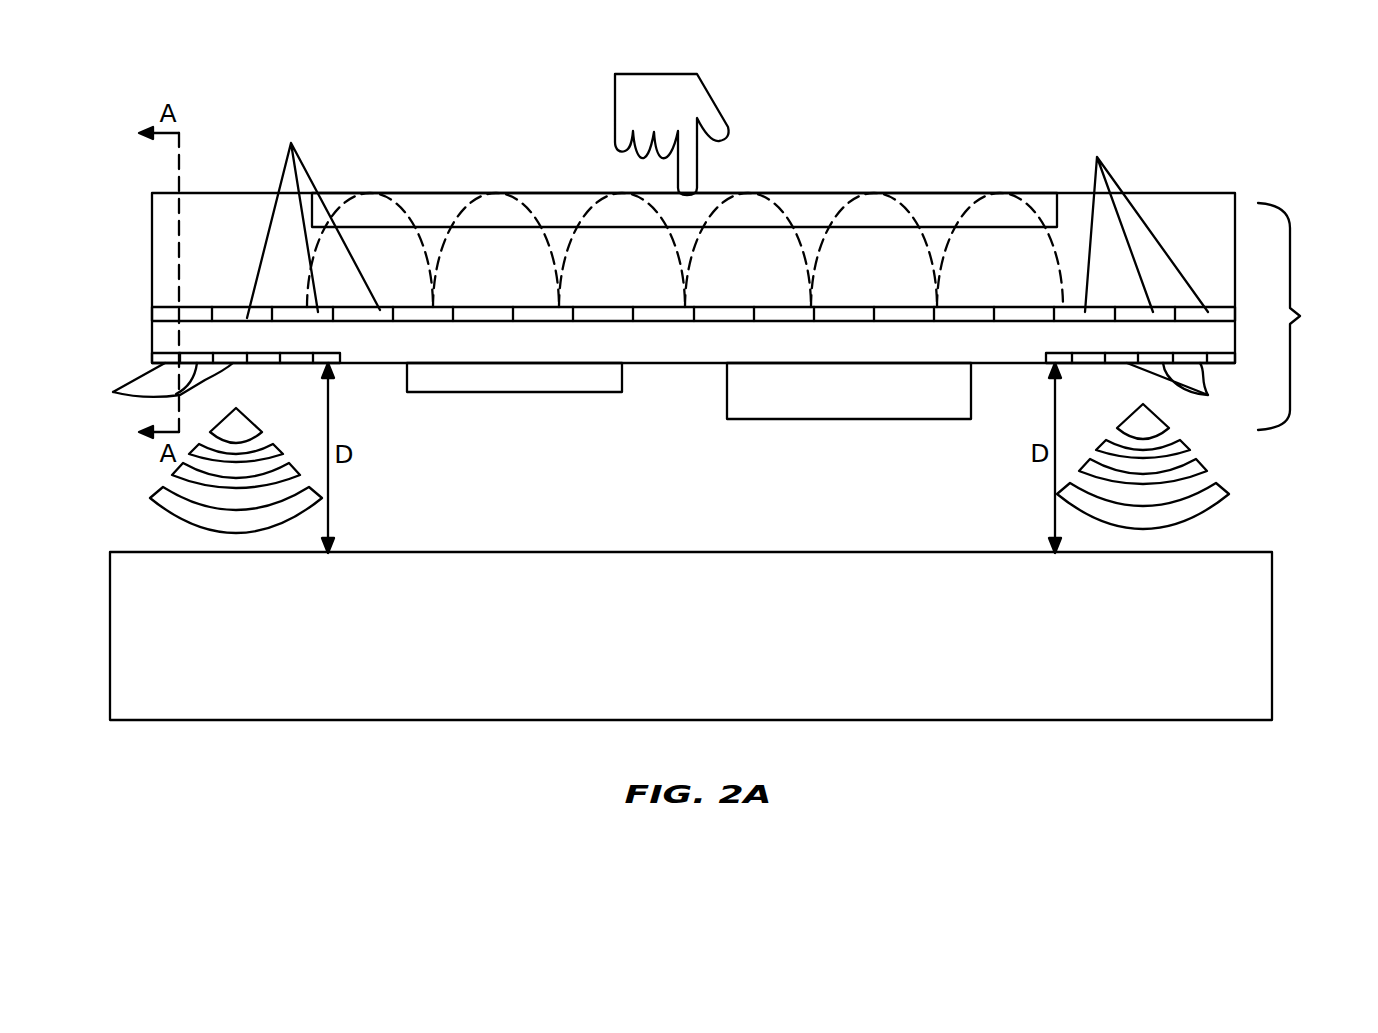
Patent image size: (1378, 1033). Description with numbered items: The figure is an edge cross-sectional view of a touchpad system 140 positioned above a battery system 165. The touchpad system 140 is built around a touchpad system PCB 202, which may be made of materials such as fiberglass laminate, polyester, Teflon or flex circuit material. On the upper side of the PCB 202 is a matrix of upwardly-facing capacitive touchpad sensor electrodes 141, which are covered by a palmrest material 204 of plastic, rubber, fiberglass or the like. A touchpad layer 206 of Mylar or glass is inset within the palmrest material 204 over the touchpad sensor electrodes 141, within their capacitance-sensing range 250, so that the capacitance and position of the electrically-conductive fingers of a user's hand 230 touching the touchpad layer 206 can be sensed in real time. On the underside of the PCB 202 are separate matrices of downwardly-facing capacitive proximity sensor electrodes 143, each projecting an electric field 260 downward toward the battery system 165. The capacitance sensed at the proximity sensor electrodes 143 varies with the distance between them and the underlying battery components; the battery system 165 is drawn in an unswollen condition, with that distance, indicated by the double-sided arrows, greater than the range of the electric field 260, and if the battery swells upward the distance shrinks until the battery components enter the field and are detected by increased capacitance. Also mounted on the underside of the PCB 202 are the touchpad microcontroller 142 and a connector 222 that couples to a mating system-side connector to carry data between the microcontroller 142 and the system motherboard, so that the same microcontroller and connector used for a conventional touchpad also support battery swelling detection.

The touchpad system 140 is at (1311, 316).
The capacitive touchpad sensor electrodes 141 is at (727, 213).
The touchpad microcontroller 142 is at (515, 393).
The capacitive proximity sensor electrodes 143 is at (660, 387).
The battery system 165 is at (110, 635).
The touchpad system PCB 202 is at (152, 333).
The palmrest material 204 is at (1172, 227).
The touchpad layer 206 is at (817, 210).
The connector 222 is at (835, 419).
The user's hand 230 is at (718, 111).
The capacitance-sensing range 250 is at (1059, 252).
The electric field 260 is at (288, 452).